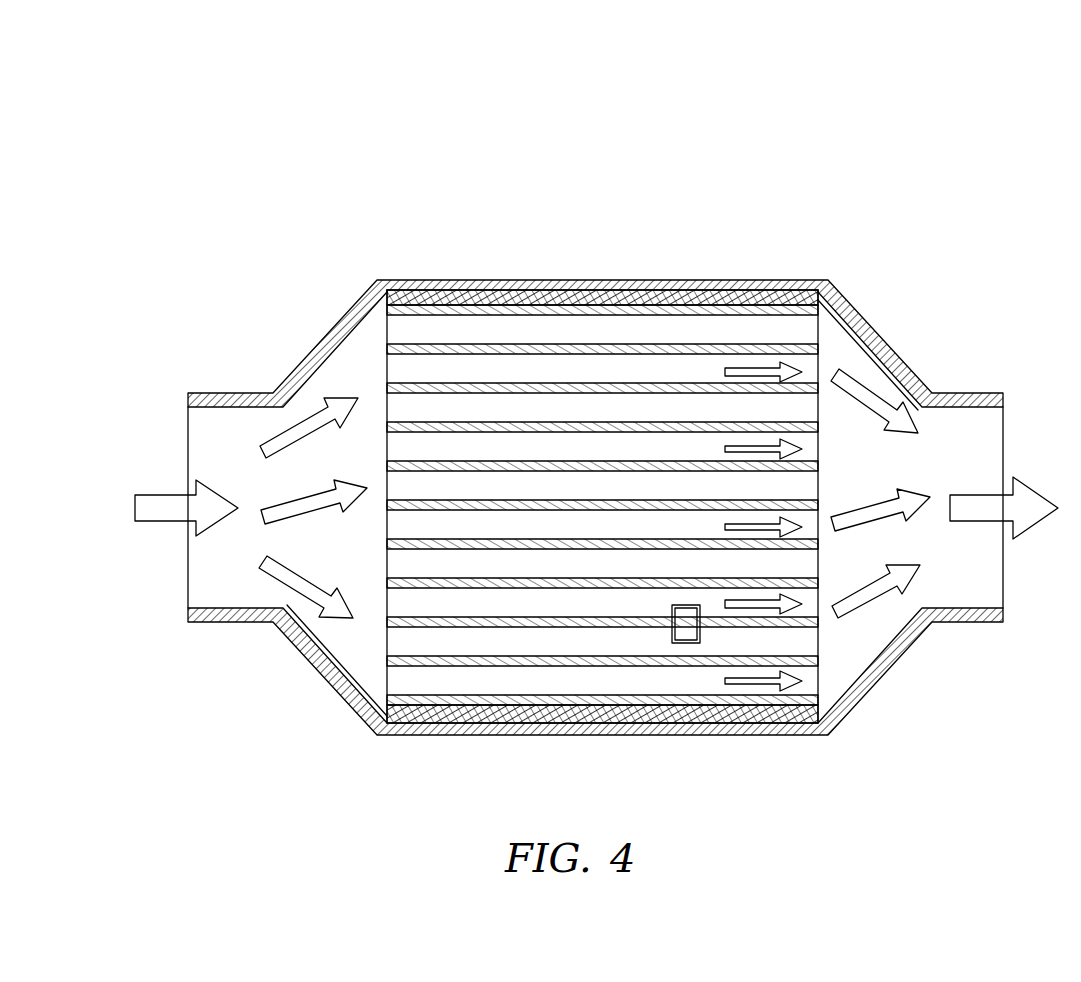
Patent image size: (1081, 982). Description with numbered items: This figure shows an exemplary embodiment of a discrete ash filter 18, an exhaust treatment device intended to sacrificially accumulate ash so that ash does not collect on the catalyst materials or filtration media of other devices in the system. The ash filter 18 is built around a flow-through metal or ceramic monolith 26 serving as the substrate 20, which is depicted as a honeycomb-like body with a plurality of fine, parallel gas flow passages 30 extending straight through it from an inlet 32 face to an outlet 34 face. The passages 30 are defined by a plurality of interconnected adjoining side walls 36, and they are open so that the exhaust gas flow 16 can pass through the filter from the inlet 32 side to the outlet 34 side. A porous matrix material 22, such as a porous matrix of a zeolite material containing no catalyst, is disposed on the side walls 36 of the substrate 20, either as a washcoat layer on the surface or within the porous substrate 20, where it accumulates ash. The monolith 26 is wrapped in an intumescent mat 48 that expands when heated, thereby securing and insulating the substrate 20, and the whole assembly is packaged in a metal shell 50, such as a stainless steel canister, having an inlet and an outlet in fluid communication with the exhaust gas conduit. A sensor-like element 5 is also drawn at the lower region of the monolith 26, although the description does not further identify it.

The sensor 5 is at (686, 643).
The exhaust gas flow 16 is at (170, 503).
The ash filter 18 is at (784, 194).
The substrate 20 is at (405, 625).
The porous matrix material 22 is at (567, 623).
The monolith 26 is at (606, 303).
The gas flow passages 30 is at (822, 372).
The inlet 32 is at (387, 432).
The outlet 34 is at (818, 565).
The side walls 36 is at (555, 350).
The intumescent mat 48 is at (430, 298).
The metal shell 50 is at (770, 280).